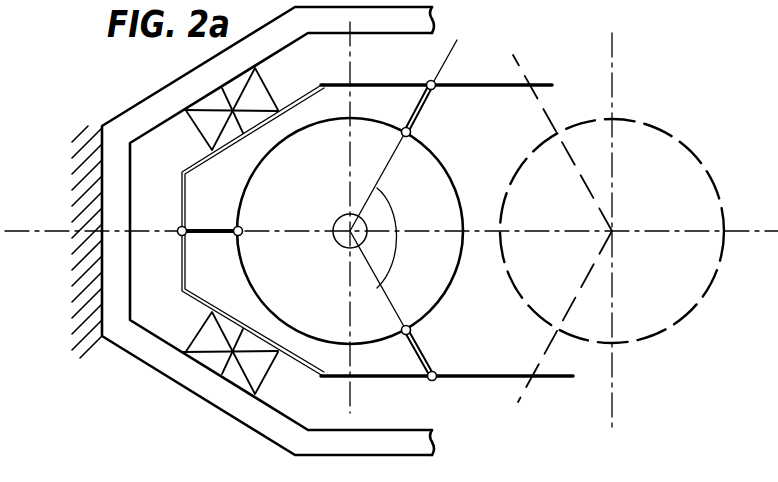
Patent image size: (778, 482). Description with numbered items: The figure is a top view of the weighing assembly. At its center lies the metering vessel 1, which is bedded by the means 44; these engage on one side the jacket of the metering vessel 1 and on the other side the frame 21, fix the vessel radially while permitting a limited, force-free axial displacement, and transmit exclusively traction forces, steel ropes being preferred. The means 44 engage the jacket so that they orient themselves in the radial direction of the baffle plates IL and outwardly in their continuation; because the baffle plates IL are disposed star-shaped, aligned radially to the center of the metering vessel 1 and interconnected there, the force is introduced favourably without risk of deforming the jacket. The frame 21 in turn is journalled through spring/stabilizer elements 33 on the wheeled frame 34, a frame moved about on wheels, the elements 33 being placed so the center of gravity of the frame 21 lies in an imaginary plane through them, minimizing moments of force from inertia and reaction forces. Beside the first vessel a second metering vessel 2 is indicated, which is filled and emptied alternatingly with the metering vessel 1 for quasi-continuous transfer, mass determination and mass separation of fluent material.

The metering vessel 1 is at (430, 315).
The second metering vessel 2 is at (660, 334).
The frame 21 is at (561, 378).
The spring/stabilizer elements 33 is at (211, 119).
The wheeled frame 34 is at (115, 178).
The means for fixing the metering vessel 44 is at (423, 106).
The baffle plates IL is at (396, 252).